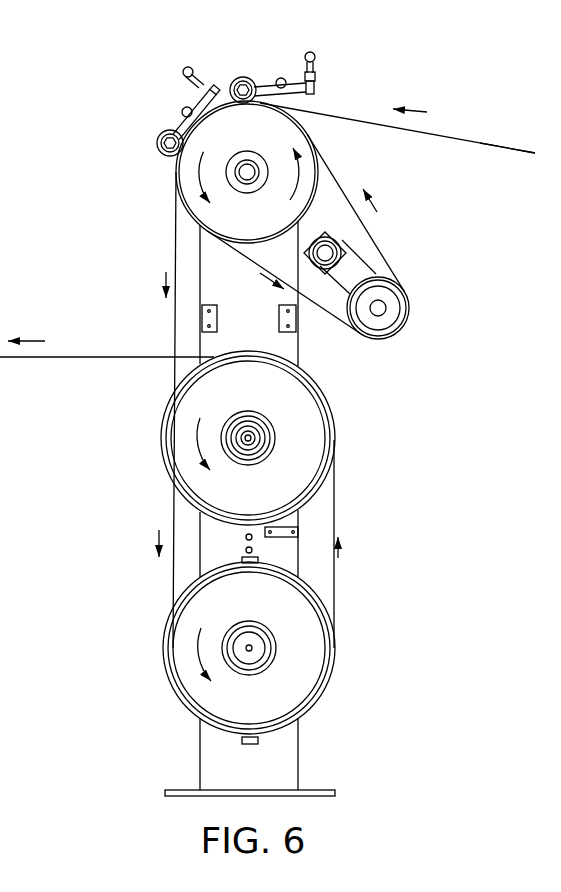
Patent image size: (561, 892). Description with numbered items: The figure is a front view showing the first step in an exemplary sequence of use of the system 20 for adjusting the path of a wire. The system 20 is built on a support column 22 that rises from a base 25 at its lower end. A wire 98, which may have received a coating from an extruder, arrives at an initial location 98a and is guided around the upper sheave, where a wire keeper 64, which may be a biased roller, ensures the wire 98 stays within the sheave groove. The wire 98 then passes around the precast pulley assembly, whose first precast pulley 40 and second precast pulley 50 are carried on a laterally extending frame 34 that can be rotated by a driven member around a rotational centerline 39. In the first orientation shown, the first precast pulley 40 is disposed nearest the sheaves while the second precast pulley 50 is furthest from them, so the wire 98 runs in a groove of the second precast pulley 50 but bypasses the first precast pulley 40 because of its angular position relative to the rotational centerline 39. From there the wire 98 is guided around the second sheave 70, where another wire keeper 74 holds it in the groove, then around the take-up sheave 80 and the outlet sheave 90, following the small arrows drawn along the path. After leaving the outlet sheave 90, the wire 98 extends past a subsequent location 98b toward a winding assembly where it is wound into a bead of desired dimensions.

The system 20 is at (77, 148).
The support column 22 is at (222, 762).
The base 25 is at (318, 790).
The frame 34 is at (331, 298).
The rotational centerline 39 is at (358, 270).
The first precast pulley 40 is at (341, 245).
The second precast pulley 50 is at (411, 297).
The wire keeper 64 is at (240, 78).
The second sheave 70 is at (178, 180).
The wire keeper 74 is at (159, 133).
The take-up sheave 80 is at (338, 645).
The outlet sheave 90 is at (296, 438).
The wire 98 is at (469, 141).
The initial location 98a is at (514, 148).
The subsequent location 98b is at (81, 360).